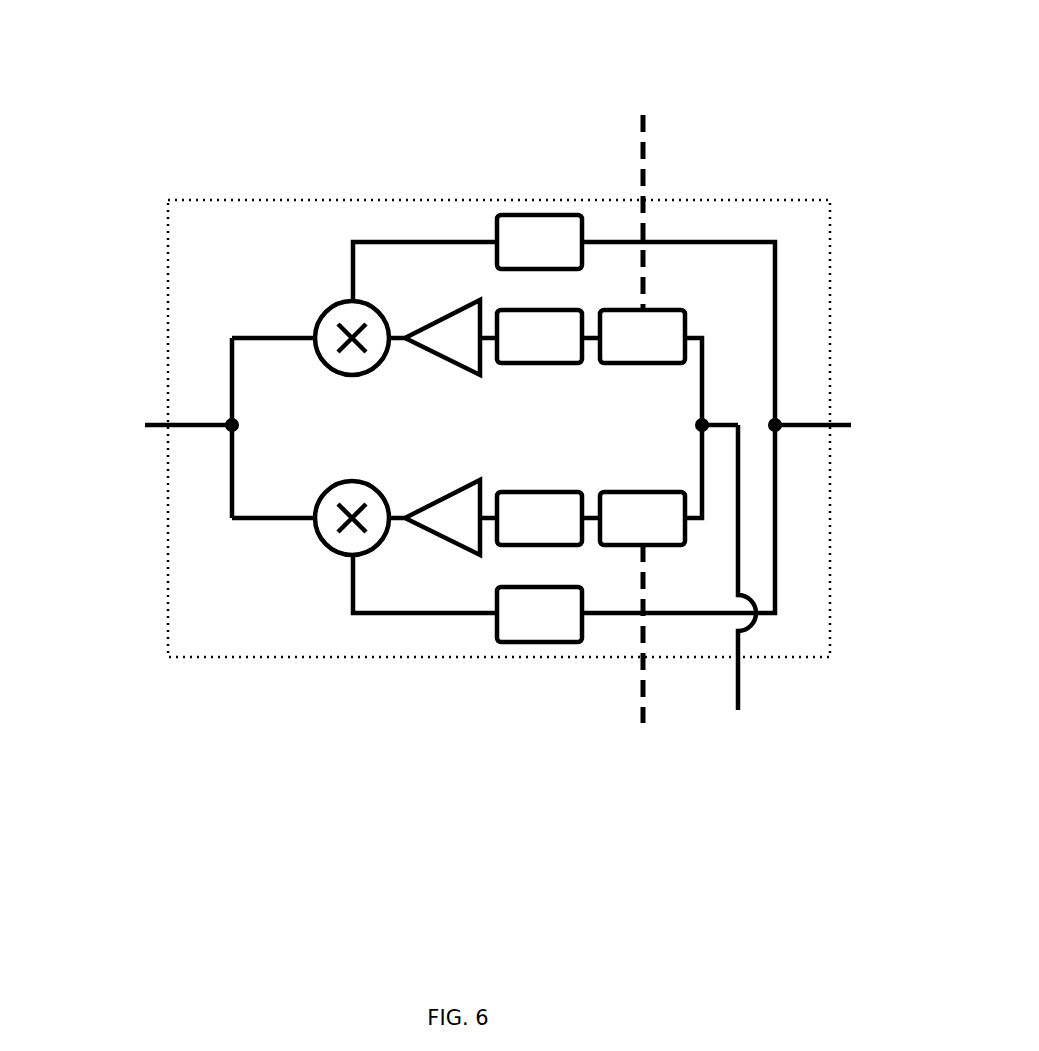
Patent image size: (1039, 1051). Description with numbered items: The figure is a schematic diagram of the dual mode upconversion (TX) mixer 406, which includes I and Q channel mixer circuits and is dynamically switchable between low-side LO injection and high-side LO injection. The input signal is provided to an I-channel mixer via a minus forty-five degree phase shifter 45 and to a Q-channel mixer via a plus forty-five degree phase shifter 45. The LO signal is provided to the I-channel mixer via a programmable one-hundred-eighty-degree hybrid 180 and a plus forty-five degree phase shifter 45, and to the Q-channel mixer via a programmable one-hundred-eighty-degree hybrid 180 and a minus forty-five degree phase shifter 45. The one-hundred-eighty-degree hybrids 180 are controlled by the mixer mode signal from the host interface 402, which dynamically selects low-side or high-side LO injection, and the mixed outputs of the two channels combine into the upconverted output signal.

The dual mode upconversion (TX) mixer 406 is at (485, 596).
The host interface 402 is at (637, 427).
The 45 degree phase shifter 45 is at (539, 428).
The 0/180 degree phase inverter 180 is at (642, 427).